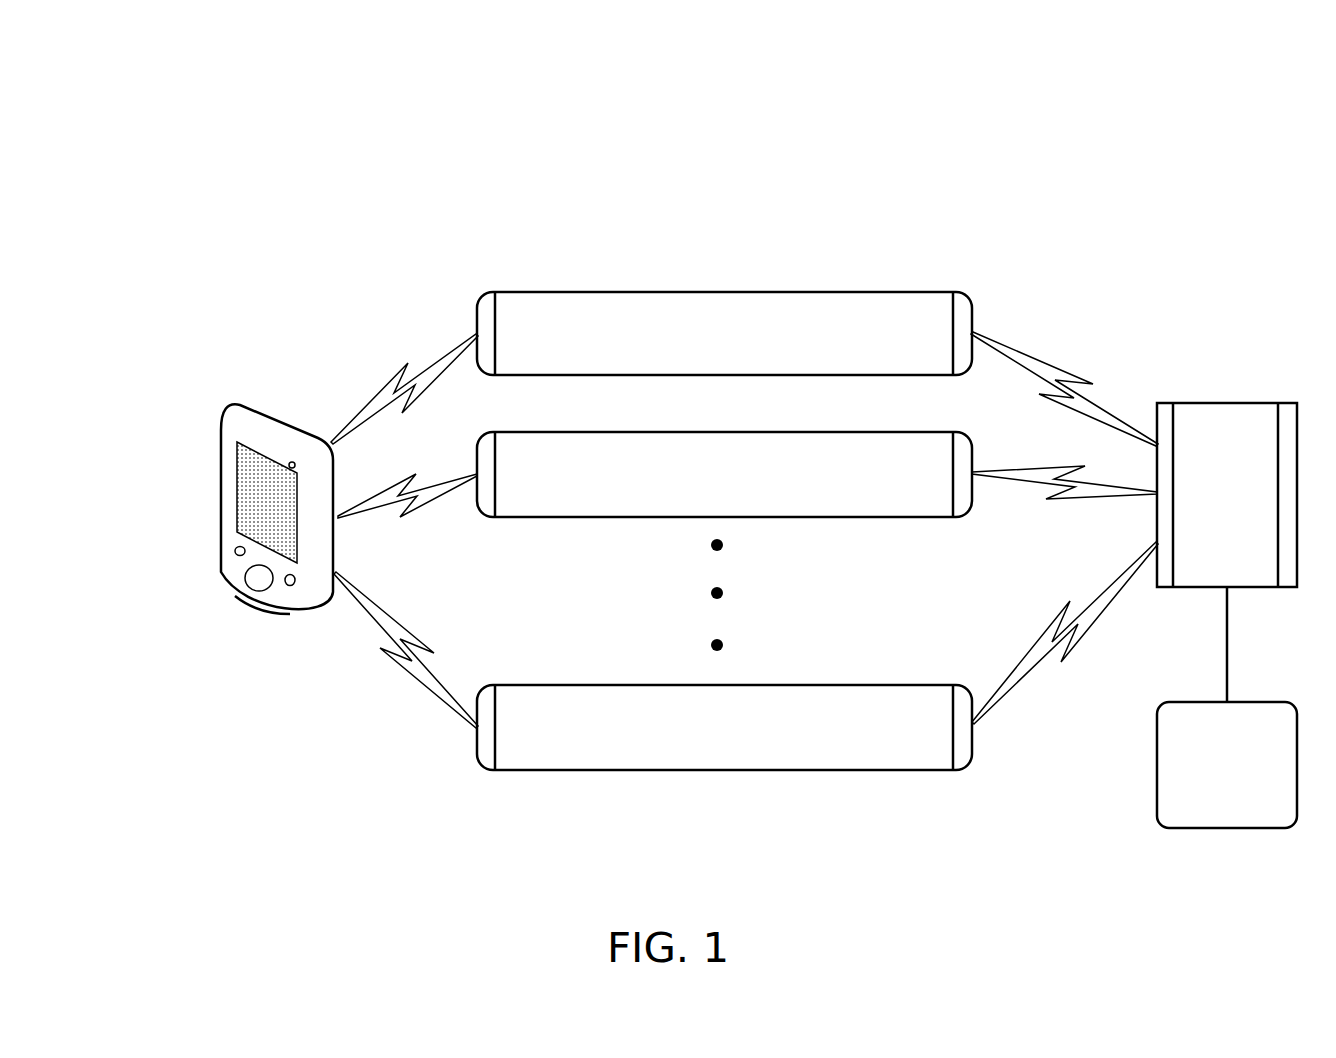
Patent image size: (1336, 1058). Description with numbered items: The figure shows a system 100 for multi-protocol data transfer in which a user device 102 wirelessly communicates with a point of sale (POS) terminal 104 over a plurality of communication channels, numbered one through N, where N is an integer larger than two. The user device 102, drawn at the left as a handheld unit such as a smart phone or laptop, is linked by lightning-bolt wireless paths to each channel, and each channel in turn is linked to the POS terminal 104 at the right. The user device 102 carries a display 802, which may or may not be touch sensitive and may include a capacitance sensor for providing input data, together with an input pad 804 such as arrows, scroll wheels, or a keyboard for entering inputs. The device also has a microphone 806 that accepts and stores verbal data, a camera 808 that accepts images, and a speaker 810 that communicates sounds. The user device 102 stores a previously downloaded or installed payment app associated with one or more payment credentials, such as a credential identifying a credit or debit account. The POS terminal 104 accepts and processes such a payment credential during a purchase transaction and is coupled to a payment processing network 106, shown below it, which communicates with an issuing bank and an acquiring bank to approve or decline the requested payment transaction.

The system 100 is at (378, 112).
The user device 102 is at (222, 431).
The point of sale (POS) terminal 104 is at (1212, 433).
The payment processing network 106 is at (1210, 820).
The display 802 is at (267, 515).
The input pad 804 is at (262, 590).
The microphone 806 is at (252, 603).
The camera 808 is at (289, 461).
The speaker 810 is at (236, 551).